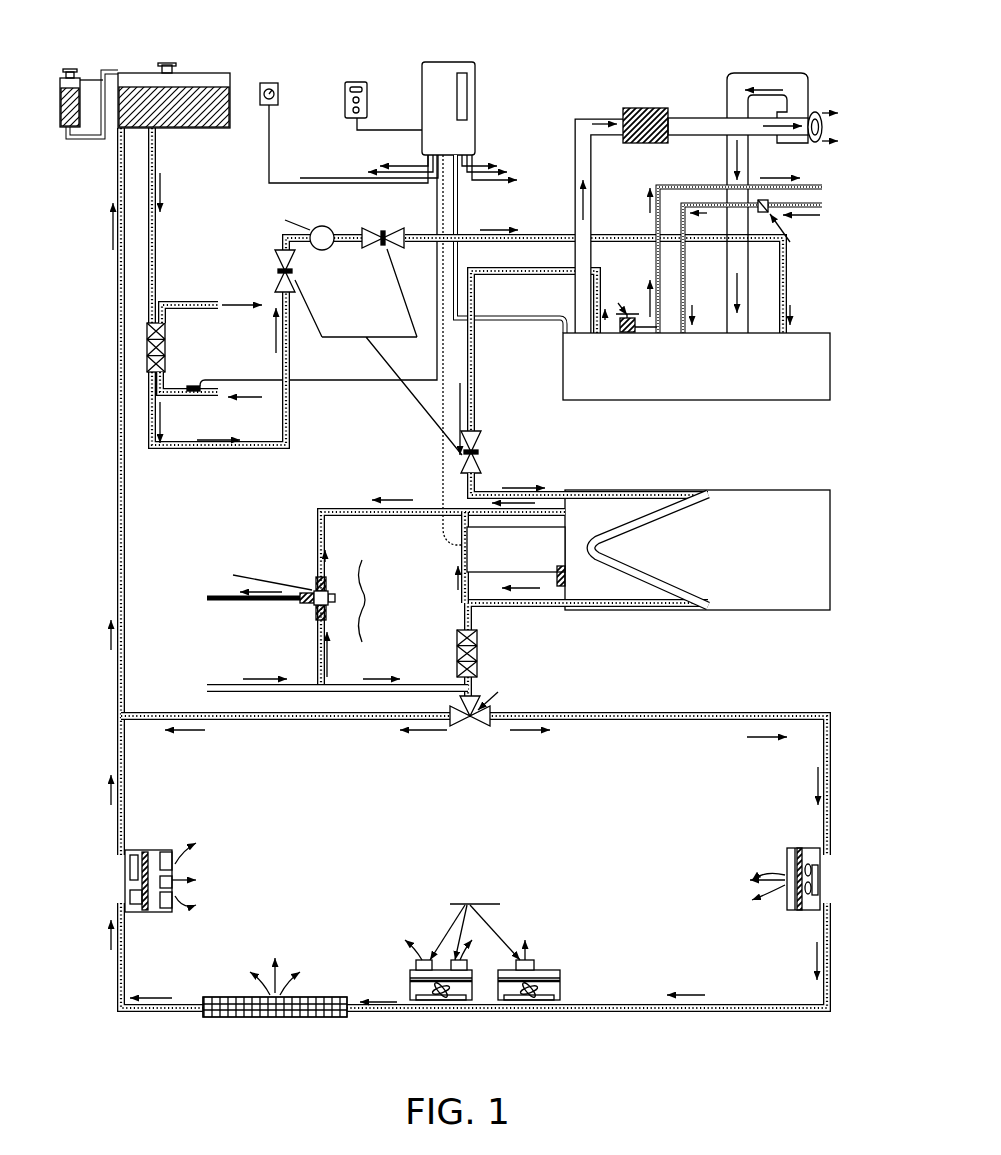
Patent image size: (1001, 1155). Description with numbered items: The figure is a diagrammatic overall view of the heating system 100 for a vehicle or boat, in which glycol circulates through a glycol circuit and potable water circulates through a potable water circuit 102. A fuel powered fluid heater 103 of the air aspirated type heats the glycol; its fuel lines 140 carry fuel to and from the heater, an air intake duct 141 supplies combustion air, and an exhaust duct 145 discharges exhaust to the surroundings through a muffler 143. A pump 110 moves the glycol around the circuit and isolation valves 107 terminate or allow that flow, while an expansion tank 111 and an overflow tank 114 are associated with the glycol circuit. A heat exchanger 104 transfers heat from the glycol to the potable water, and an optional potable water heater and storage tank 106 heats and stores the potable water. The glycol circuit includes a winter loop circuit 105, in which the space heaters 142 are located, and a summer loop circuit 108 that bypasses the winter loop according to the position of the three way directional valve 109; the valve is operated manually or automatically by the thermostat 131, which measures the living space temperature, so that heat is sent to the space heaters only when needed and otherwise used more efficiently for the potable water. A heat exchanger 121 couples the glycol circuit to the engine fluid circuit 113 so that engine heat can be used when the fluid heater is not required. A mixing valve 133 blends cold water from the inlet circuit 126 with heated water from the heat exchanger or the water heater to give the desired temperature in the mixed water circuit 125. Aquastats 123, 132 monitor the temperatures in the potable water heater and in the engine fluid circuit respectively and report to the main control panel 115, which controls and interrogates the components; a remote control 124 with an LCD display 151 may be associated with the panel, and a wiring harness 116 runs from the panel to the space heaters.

The heating system 100 is at (692, 694).
The potable water circuit 102 is at (343, 507).
The fuel powered fluid heater 103 is at (673, 400).
The heat exchanger 104 is at (455, 646).
The winter loop circuit 105 is at (675, 722).
The potable water heater and storage tank 106 is at (703, 610).
The isolation valves 107 is at (390, 228).
The summer loop circuit 108 is at (352, 719).
The three way directional valve 109 is at (452, 720).
The pump 110 is at (326, 227).
The expansion tank 111 is at (197, 72).
The engine fluid circuit 113 is at (180, 302).
The overflow tank 114 is at (85, 78).
The main control panel 115 is at (475, 74).
The wiring harness 116 is at (467, 88).
The heat exchanger 121 is at (167, 329).
The aquastat 123 is at (562, 579).
The remote control 124 is at (370, 92).
The mixed water circuit 125 is at (212, 601).
The inlet circuit 126 is at (218, 690).
The thermostat 131 is at (278, 95).
The aquastat 132 is at (172, 398).
The mixing valve 133 is at (316, 614).
The fuel lines 140 is at (658, 230).
The air intake duct 141 is at (763, 72).
The space heaters 142 is at (178, 870).
The muffler 143 is at (623, 112).
The exhaust duct 145 is at (595, 164).
The LCD display 151 is at (367, 110).